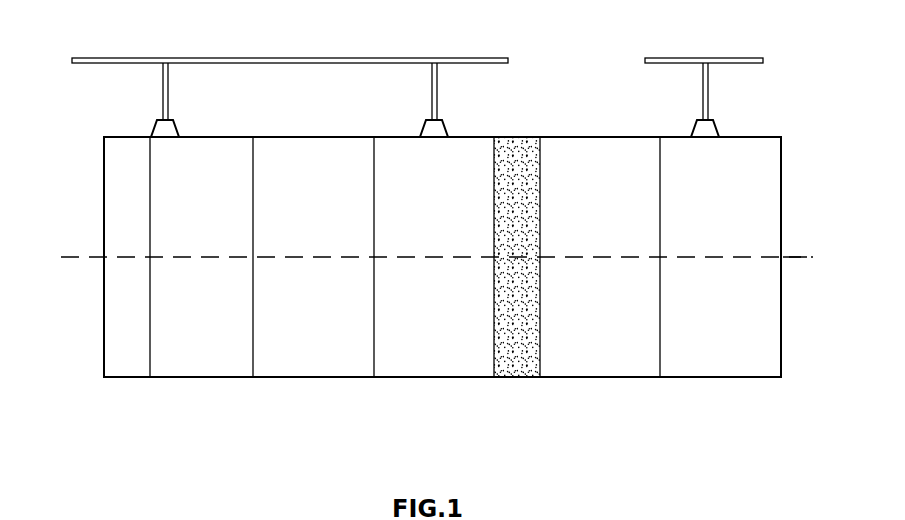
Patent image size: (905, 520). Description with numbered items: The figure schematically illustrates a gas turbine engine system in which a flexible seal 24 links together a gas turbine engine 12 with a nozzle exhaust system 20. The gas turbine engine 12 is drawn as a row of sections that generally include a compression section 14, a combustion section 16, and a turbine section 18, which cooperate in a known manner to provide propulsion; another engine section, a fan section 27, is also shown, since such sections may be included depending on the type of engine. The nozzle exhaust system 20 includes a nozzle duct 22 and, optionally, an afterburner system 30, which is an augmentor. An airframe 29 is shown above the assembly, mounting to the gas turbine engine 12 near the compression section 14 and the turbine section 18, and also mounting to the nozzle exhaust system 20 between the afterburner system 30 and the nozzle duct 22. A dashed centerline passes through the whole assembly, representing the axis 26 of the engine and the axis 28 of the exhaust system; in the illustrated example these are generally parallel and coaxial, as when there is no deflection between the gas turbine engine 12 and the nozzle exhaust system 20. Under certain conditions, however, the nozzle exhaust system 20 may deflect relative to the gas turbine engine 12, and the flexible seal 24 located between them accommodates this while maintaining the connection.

The gas turbine engine 12 is at (495, 428).
The compression section 14 is at (209, 388).
The combustion section 16 is at (313, 388).
The turbine section 18 is at (432, 388).
The nozzle exhaust system 20 is at (785, 428).
The nozzle duct 22 is at (597, 388).
The flexible seal 24 is at (523, 126).
The axis 26 is at (78, 246).
The fan section 27 is at (132, 388).
The axis 28 is at (799, 246).
The airframe 29 is at (650, 47).
The afterburner system 30 is at (722, 388).